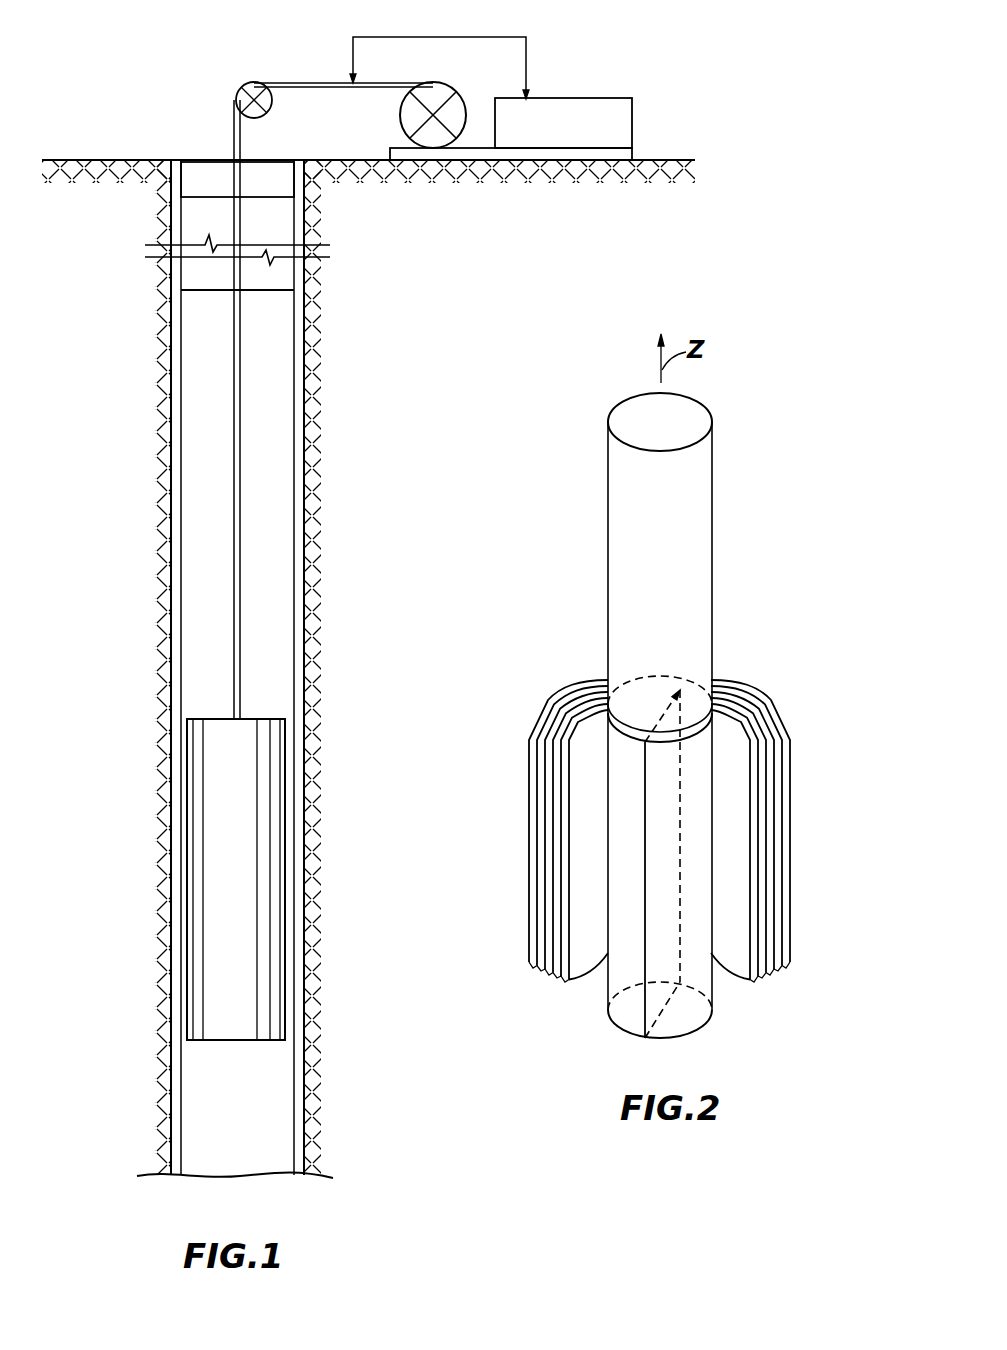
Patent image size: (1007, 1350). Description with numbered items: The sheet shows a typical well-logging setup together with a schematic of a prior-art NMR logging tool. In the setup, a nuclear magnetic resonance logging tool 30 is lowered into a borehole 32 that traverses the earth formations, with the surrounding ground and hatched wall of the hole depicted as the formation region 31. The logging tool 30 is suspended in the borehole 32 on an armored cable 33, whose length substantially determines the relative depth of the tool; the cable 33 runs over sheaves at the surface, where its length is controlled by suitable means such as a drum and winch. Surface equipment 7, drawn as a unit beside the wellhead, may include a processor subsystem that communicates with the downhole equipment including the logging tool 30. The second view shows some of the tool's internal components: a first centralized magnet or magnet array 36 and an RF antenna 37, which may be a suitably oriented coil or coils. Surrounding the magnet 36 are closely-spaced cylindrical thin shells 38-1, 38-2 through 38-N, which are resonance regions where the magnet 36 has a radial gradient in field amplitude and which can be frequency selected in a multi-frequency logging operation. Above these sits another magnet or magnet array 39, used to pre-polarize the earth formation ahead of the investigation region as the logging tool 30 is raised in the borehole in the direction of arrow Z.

In FIG. 1, the surface equipment 7 is at (612, 108).
In FIG. 1, the NMR logging tool 30 is at (207, 717).
In FIG. 1, the earth formation / ground surface 31 is at (102, 160).
In FIG. 1, the borehole 32 is at (203, 177).
In FIG. 1, the armored cable 33 is at (231, 157).
In FIG. 2, the first centralized magnet or magnet array 36 is at (655, 807).
In FIG. 2, the RF antenna 37 is at (640, 868).
In FIG. 2, the cylindrical thin shell 38-1 is at (750, 777).
In FIG. 2, the cylindrical thin shell 38-2 is at (758, 796).
In FIG. 2, the cylindrical thin shell 38-N is at (788, 820).
In FIG. 2, the pre-polarization magnet or magnet array 39 is at (698, 538).